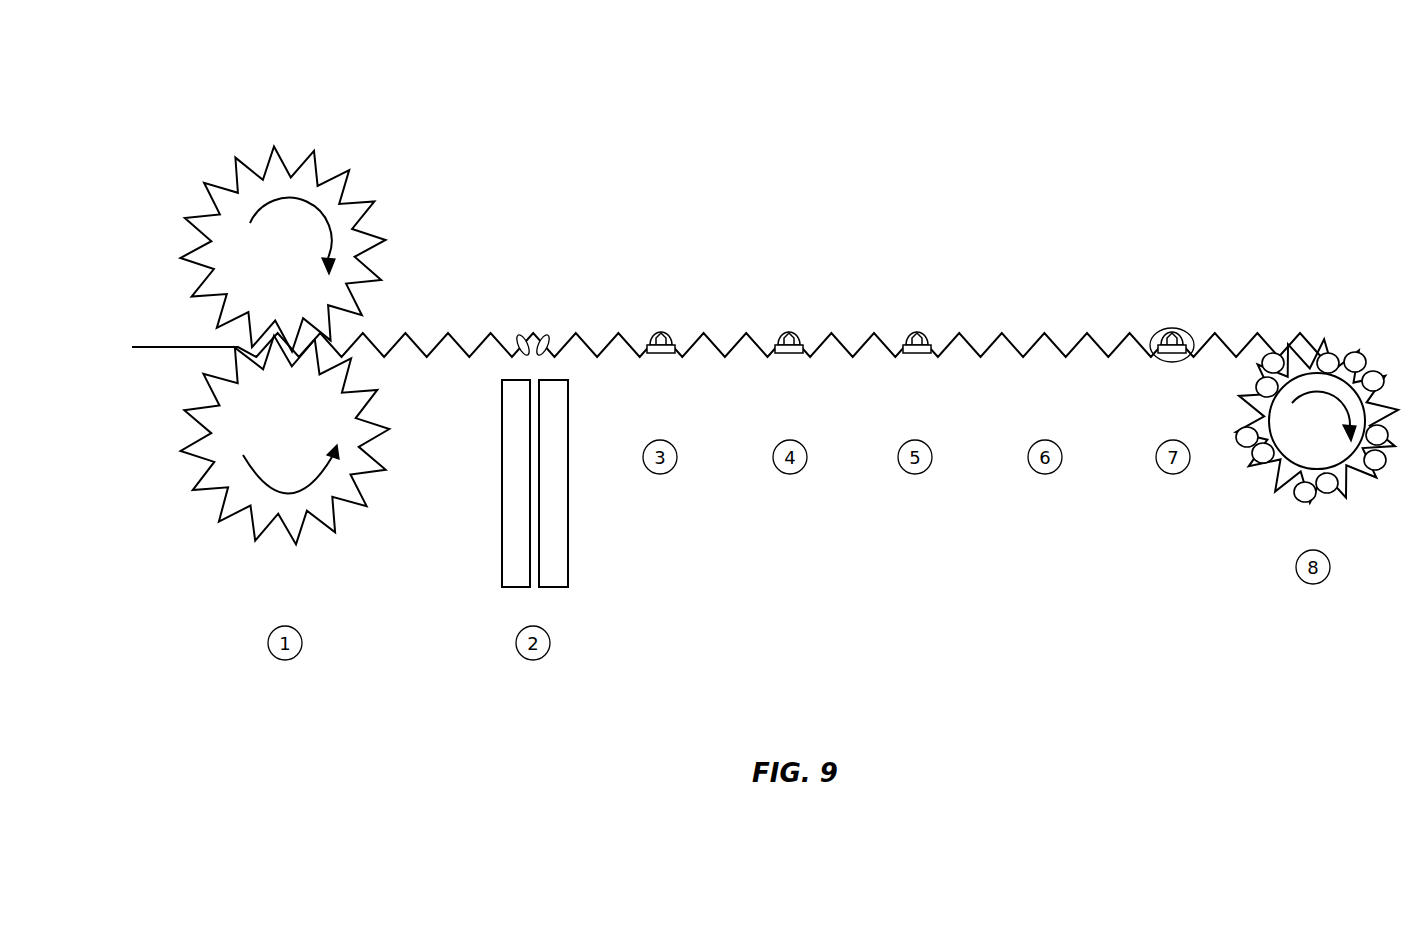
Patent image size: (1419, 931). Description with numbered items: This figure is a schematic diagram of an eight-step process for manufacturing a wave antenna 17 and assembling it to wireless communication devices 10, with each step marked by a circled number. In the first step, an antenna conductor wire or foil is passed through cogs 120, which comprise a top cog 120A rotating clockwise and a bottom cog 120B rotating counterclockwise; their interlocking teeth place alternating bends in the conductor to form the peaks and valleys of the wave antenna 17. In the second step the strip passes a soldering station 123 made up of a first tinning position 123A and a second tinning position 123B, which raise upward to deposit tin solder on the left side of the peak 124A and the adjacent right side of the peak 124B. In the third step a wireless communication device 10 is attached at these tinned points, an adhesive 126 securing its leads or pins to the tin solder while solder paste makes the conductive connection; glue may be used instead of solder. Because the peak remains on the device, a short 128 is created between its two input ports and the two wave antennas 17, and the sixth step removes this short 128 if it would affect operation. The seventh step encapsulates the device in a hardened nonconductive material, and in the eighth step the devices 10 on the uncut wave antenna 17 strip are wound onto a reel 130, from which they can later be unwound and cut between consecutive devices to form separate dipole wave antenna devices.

The wireless communication device 10 is at (657, 357).
The wave antenna 17 is at (180, 350).
The cogs 120 is at (160, 282).
The top cog 120A is at (267, 160).
The bottom cog 120B is at (218, 488).
The soldering station 123 is at (590, 515).
The first tinning position 123A is at (553, 558).
The second tinning position 123B is at (512, 552).
The left side of the peak 124A is at (525, 338).
The right side of the peak 124B is at (543, 338).
The adhesive 126 is at (645, 355).
The short 128 is at (1180, 330).
The reel 130 is at (1275, 478).